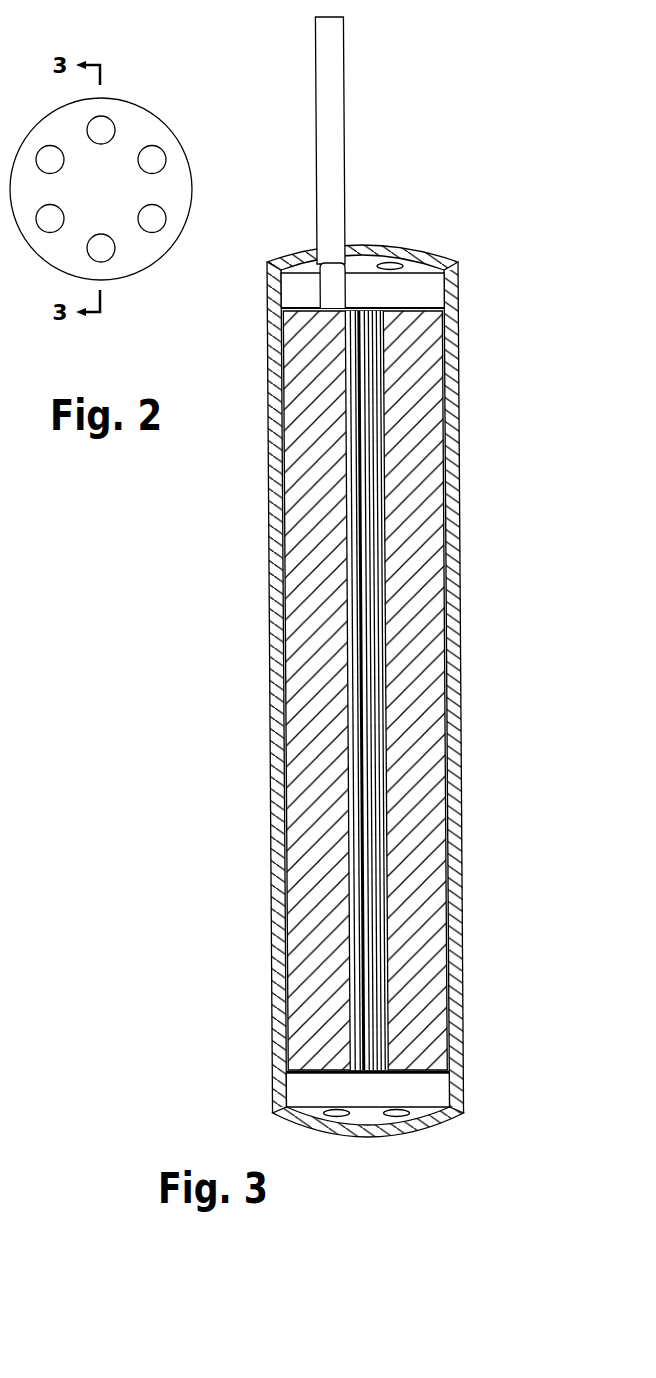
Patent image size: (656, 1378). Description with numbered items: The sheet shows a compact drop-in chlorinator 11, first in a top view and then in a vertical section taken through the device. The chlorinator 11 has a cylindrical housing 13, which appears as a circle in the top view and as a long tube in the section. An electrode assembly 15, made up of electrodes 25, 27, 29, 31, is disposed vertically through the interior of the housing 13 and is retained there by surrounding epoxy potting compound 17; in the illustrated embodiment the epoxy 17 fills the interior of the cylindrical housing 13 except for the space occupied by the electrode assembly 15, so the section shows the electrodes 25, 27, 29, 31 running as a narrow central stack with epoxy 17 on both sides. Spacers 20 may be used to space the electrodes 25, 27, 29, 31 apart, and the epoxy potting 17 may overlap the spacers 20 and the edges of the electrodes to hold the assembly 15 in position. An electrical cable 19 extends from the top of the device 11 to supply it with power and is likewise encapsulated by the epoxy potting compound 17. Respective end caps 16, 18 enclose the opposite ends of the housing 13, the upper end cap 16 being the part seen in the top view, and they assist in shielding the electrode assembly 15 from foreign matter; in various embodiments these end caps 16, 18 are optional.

In FIG. 3, the chlorinator 11 is at (500, 451).
In FIG. 3, the cylindrical housing 13 is at (456, 553).
In FIG. 3, the electrode assembly 15 is at (383, 387).
In FIG. 2, the end cap 16 is at (137, 123).
In FIG. 3, the end cap 16 is at (372, 250).
In FIG. 3, the epoxy potting compound 17 is at (396, 784).
In FIG. 3, the end cap 18 is at (457, 1088).
In FIG. 3, the electrical cable 19 is at (339, 100).
In FIG. 3, the spacers 20 is at (344, 327).
In FIG. 3, the electrode 25 is at (345, 580).
In FIG. 3, the electrode 27 is at (370, 818).
In FIG. 3, the electrode 29 is at (380, 648).
In FIG. 3, the electrode 31 is at (369, 855).